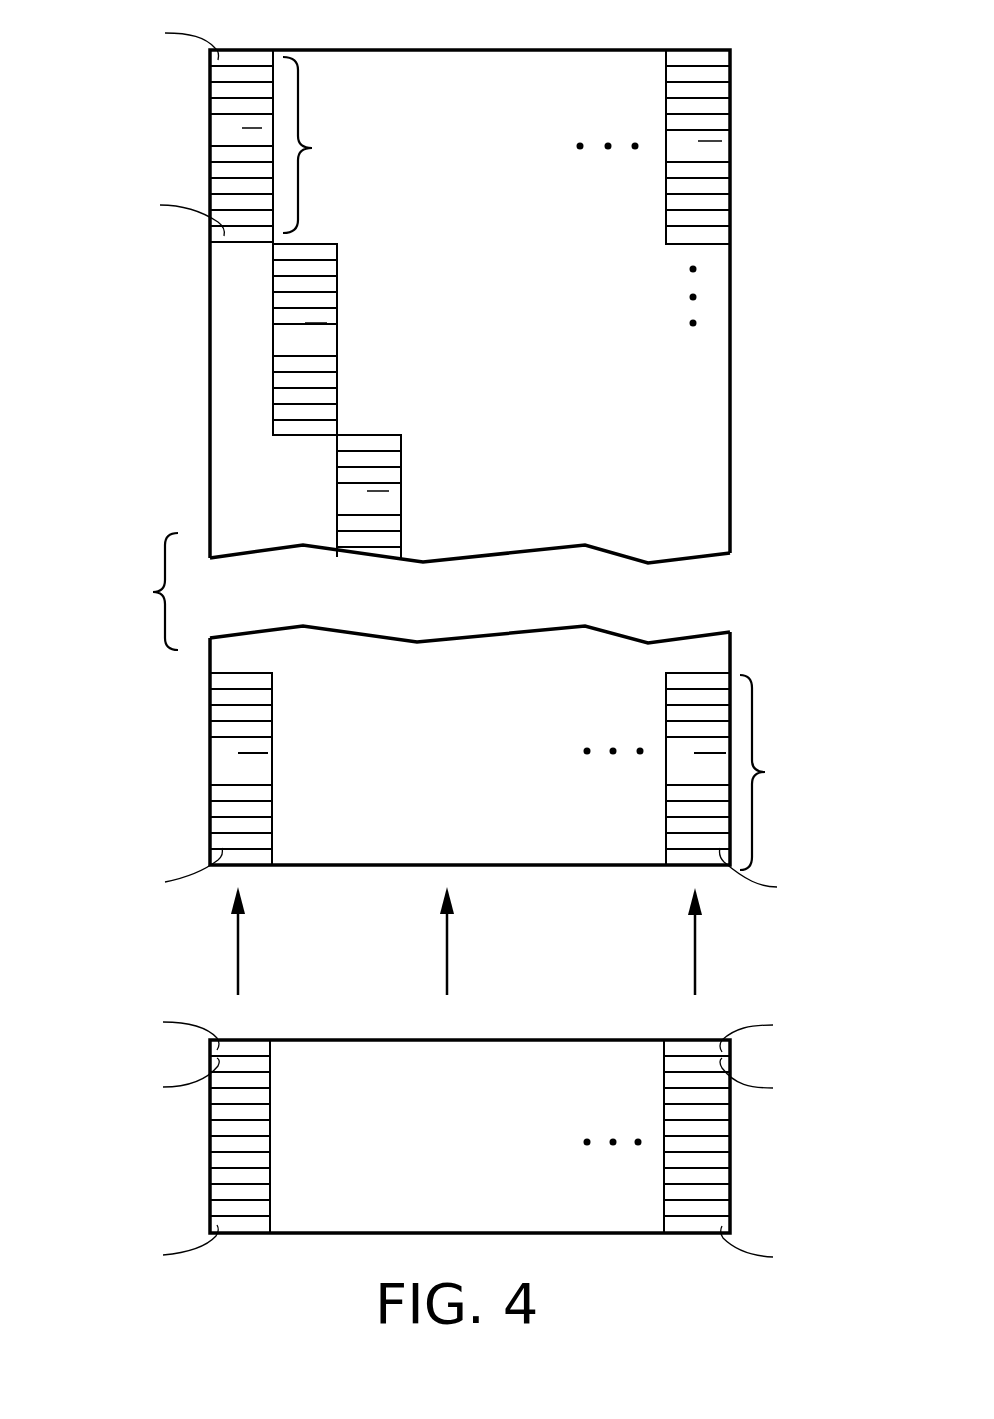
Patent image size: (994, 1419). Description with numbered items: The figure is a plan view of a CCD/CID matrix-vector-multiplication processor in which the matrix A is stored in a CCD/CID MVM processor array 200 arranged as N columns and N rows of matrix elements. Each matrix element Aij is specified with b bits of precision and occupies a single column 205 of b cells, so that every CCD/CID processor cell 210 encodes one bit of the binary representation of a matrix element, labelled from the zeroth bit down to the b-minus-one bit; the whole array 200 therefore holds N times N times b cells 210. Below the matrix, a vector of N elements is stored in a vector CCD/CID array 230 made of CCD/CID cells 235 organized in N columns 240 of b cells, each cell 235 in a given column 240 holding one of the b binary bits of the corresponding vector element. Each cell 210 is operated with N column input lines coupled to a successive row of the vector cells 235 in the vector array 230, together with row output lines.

The CCD/CID MVM processor array 200 is at (792, 322).
The column 205 is at (205, 240).
The CCD/CID processor cell 210 is at (720, 92).
The vector CCD/CID array 230 is at (184, 1128).
The vector CCD/CID cell 235 is at (267, 1147).
The column 240 is at (270, 1040).